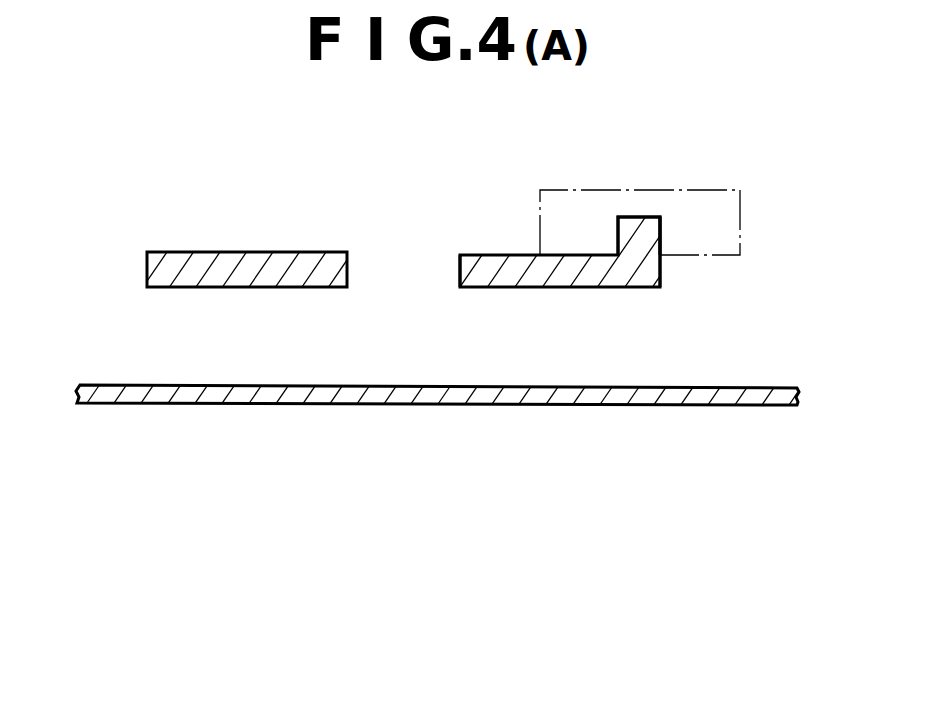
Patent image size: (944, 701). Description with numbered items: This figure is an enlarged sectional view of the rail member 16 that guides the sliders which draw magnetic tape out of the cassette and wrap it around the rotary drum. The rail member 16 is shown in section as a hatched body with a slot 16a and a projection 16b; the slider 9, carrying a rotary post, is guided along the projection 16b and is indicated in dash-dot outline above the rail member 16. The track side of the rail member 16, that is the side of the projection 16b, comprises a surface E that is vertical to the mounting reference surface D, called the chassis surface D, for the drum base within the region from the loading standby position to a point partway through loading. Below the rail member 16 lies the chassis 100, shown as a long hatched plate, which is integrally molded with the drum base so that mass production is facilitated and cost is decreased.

The rail member 16 is at (233, 265).
The slot 16a is at (460, 267).
The projection 16b is at (640, 227).
The slider 9 is at (713, 188).
The surface E is at (663, 228).
The chassis surface D is at (750, 388).
The chassis 100 is at (634, 400).